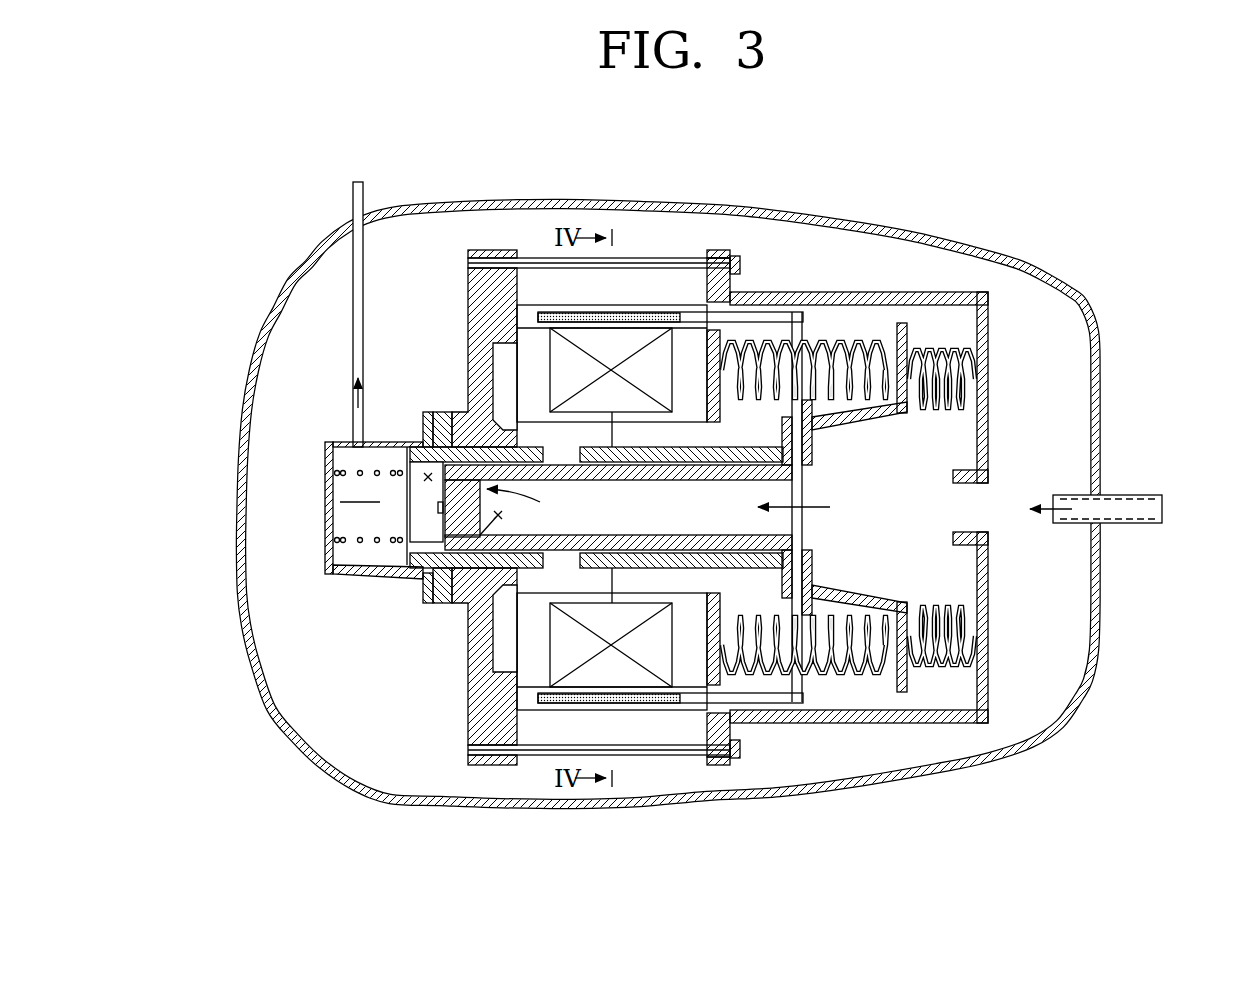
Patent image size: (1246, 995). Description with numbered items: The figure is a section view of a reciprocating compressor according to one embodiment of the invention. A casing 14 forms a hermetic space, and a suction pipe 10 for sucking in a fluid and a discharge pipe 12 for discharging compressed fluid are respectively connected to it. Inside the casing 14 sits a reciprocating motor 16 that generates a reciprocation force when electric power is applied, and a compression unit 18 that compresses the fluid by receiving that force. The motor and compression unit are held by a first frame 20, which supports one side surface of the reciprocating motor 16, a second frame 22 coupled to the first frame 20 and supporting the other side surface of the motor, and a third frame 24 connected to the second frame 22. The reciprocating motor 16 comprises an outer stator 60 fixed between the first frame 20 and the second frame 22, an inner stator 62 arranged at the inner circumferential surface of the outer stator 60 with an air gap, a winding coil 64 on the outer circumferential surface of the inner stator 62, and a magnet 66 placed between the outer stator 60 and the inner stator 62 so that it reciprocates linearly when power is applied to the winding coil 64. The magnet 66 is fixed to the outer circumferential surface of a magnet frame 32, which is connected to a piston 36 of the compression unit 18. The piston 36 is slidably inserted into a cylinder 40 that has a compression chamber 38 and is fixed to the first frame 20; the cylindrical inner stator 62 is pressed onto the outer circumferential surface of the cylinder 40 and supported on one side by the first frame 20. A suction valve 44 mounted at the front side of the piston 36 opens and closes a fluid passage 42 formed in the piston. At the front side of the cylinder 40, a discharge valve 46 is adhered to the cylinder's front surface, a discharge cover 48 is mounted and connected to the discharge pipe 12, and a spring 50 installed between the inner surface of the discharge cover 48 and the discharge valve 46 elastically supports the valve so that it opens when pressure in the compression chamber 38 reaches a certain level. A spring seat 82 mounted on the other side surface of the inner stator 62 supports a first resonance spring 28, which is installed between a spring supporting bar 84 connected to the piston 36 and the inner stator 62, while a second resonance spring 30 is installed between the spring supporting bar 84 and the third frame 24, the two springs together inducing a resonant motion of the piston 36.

The suction pipe 10 is at (1165, 509).
The discharge pipe 12 is at (356, 205).
The casing 14 is at (293, 282).
The reciprocating motor 16 is at (640, 758).
The compression unit 18 is at (712, 563).
The first frame 20 is at (494, 272).
The second frame 22 is at (707, 250).
The third frame 24 is at (758, 292).
The first resonance spring 28 is at (857, 343).
The second resonance spring 30 is at (947, 357).
The magnet frame 32 is at (778, 723).
The piston 36 is at (338, 541).
The compression chamber 38 is at (428, 477).
The cylinder 40 is at (328, 571).
The fluid passage 42 is at (430, 590).
The suction valve 44 is at (407, 531).
The discharge valve 46 is at (394, 502).
The discharge cover 48 is at (323, 453).
The spring 50 is at (338, 474).
The outer stator 60 is at (527, 725).
The inner stator 62 is at (527, 637).
The winding coil 64 is at (776, 703).
The magnet 66 is at (662, 703).
The spring seat 82 is at (717, 352).
The spring supporting bar 84 is at (900, 323).